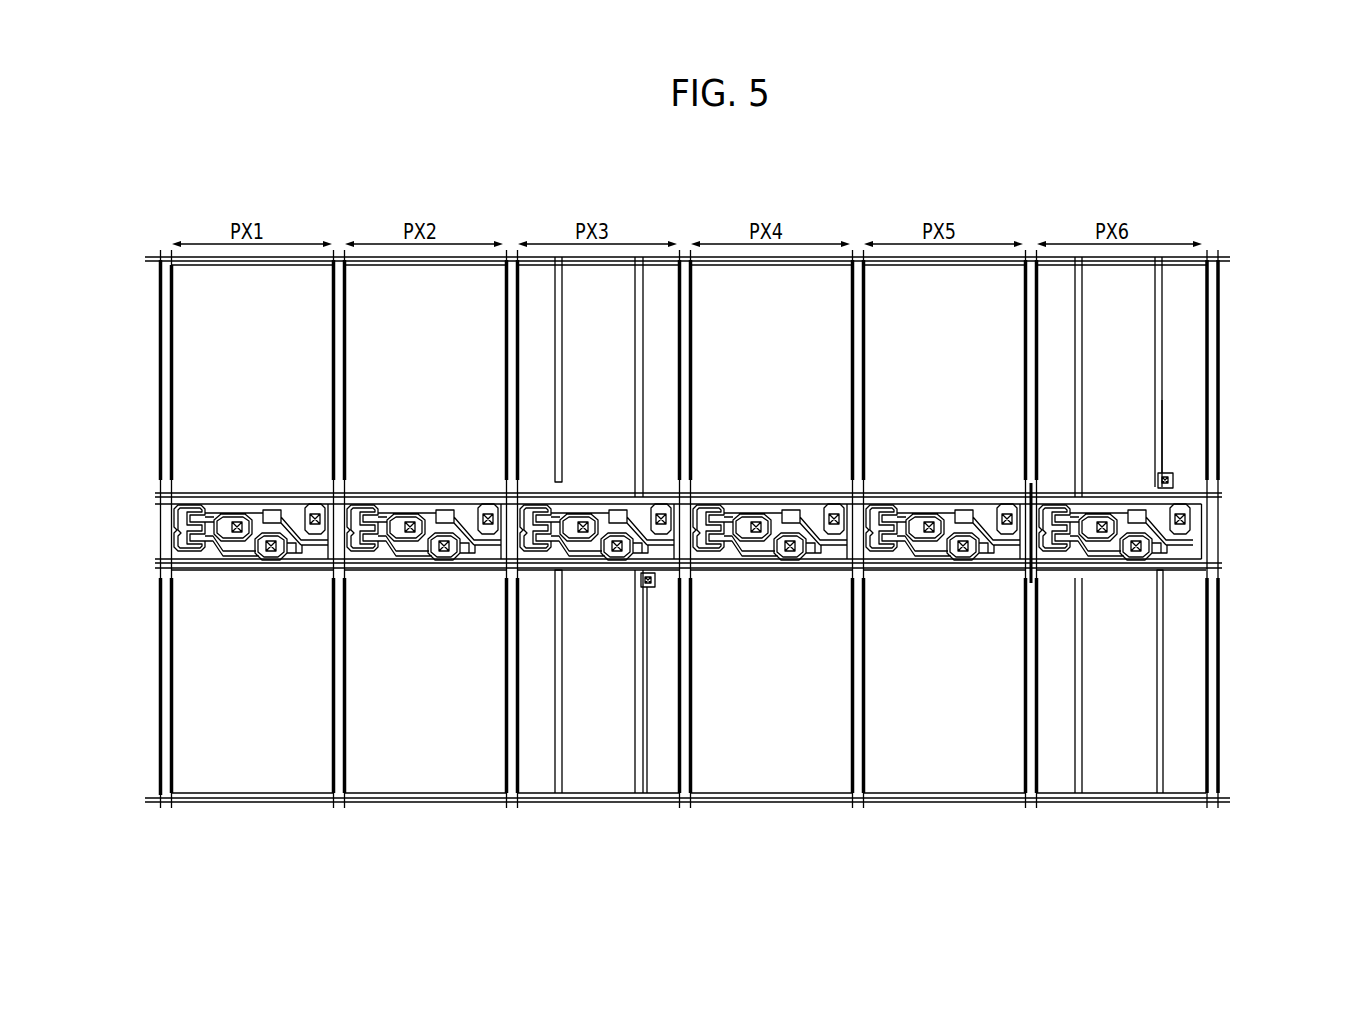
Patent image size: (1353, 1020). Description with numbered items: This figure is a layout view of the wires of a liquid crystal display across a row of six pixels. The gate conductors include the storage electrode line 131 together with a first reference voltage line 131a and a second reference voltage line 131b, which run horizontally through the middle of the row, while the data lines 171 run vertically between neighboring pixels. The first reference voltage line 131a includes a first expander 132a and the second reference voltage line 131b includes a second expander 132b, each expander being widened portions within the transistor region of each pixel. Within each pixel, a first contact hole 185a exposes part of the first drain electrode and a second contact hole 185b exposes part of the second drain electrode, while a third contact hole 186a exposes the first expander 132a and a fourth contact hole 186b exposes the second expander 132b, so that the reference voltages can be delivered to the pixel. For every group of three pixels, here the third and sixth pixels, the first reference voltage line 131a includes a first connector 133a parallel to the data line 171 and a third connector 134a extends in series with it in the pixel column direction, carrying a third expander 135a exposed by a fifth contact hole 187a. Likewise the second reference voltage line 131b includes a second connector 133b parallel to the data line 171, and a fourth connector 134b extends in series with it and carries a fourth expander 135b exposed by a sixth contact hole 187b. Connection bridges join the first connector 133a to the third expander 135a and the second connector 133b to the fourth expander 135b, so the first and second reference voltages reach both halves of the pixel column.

The data line 171 is at (160, 257).
The storage electrode line 131 is at (160, 265).
The first reference voltage line 131a is at (1182, 492).
The second reference voltage line 131b is at (1163, 571).
The first expander 132a is at (328, 560).
The second expander 132b is at (492, 503).
The first connector 133a is at (643, 282).
The second connector 133b is at (562, 710).
The third connector 134a is at (645, 734).
The fourth connector 134b is at (562, 360).
The third expander 135a is at (650, 590).
The fourth expander 135b is at (1167, 473).
The first contact hole 185a is at (237, 521).
The second contact hole 185b is at (272, 554).
The third contact hole 186a is at (313, 510).
The fourth contact hole 186b is at (491, 537).
The fifth contact hole 187a is at (640, 582).
The sixth contact hole 187b is at (1175, 481).